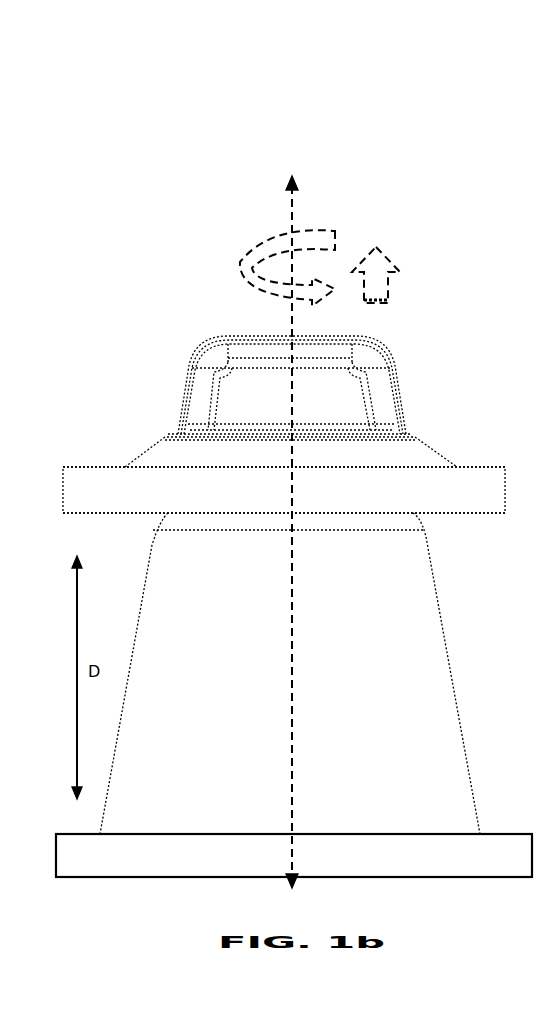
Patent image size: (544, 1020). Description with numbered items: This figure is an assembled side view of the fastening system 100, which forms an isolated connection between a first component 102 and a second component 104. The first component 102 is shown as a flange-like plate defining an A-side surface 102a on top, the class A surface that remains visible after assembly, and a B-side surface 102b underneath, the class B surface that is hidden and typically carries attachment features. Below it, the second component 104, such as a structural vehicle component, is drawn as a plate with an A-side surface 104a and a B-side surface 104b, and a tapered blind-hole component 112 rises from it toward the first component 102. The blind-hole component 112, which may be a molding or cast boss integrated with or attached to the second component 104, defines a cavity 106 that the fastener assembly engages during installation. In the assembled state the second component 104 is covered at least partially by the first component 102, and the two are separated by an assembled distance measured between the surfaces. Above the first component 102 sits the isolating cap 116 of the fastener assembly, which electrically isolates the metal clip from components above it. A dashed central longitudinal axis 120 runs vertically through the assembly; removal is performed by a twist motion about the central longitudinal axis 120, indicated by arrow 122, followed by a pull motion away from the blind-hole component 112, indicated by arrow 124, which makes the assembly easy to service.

The fastening system 100 is at (491, 89).
The first component 102 is at (500, 467).
The A-side surface 102a is at (68, 467).
The B-side surface 102b is at (70, 513).
The second component 104 is at (512, 834).
The A-side surface 104a is at (70, 834).
The B-side surface 104b is at (70, 877).
The cavity 106 is at (129, 397).
The blind-hole component 112 is at (444, 638).
The isolating cap 116 is at (411, 374).
The central longitudinal axis 120 is at (290, 222).
The arrow 122 is at (244, 262).
The arrow 124 is at (402, 286).